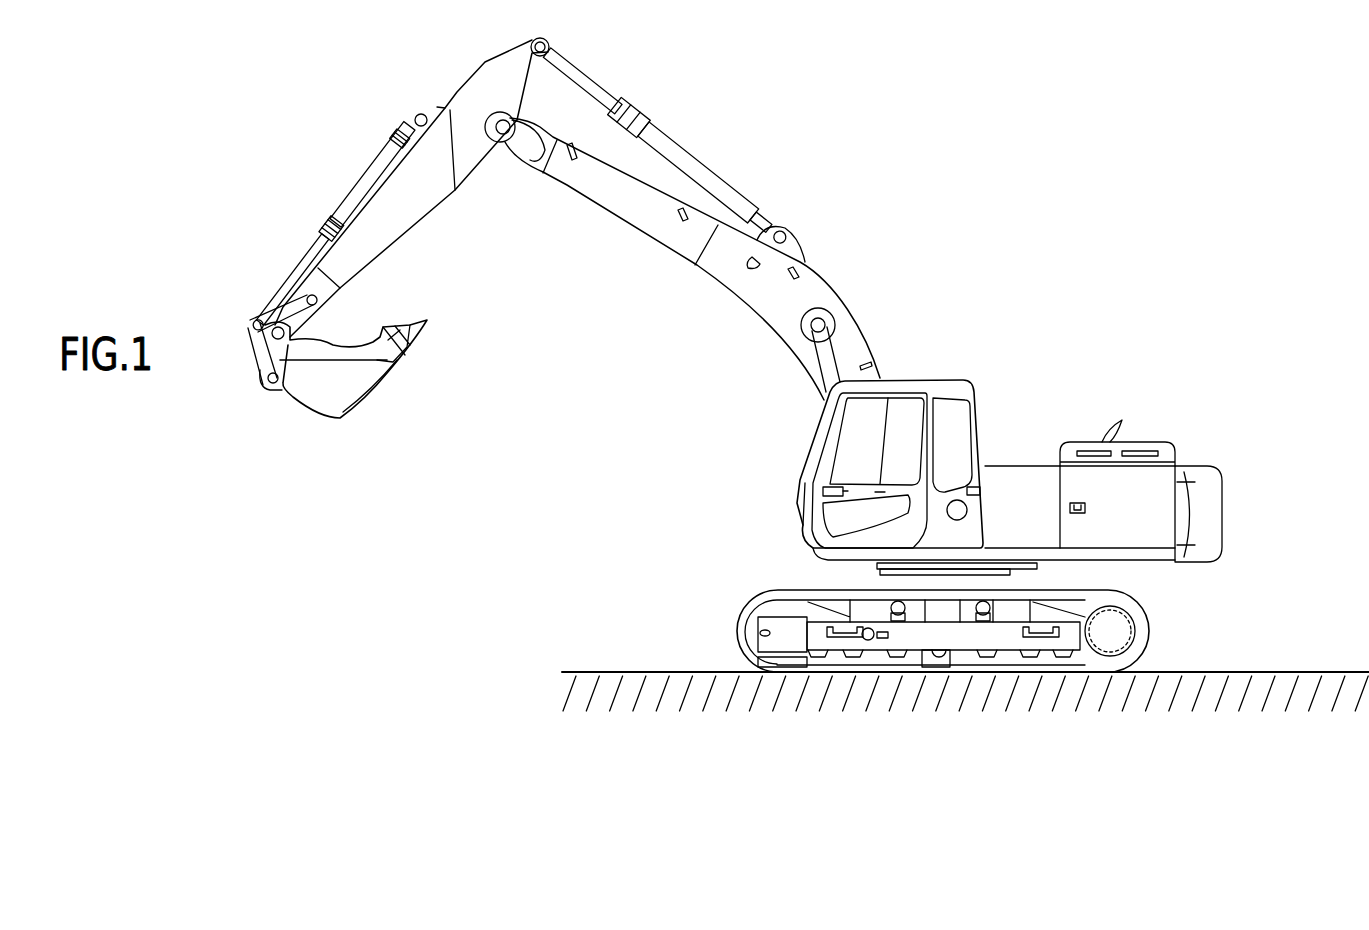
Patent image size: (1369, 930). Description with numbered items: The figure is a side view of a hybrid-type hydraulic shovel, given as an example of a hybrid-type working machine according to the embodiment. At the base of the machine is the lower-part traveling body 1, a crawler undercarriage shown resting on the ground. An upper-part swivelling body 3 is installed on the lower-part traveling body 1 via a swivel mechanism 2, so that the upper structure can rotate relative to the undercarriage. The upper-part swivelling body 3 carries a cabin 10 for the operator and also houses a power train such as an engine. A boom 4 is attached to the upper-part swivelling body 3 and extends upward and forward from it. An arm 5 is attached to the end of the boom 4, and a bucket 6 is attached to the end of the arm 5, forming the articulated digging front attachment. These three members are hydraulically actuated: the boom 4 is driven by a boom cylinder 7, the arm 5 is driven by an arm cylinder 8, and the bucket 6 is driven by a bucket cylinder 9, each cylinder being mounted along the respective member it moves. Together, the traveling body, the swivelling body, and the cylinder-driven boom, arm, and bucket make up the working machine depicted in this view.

The lower-part traveling body 1 is at (733, 631).
The swivel mechanism 2 is at (1012, 573).
The upper-part swivelling body 3 is at (1025, 463).
The boom 4 is at (728, 280).
The arm 5 is at (427, 198).
The bucket 6 is at (333, 413).
The boom cylinder 7 is at (830, 360).
The arm cylinder 8 is at (718, 181).
The bucket cylinder 9 is at (368, 183).
The cabin 10 is at (960, 378).